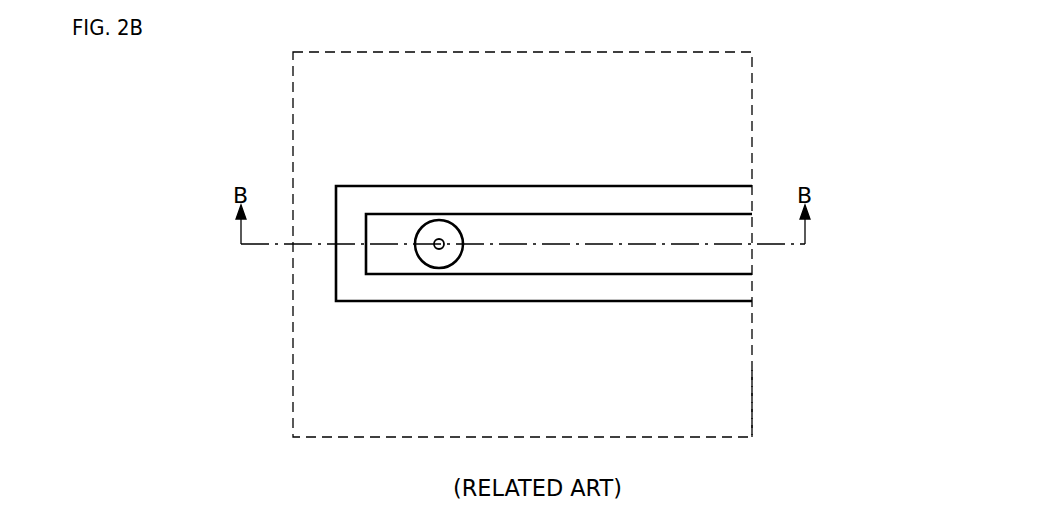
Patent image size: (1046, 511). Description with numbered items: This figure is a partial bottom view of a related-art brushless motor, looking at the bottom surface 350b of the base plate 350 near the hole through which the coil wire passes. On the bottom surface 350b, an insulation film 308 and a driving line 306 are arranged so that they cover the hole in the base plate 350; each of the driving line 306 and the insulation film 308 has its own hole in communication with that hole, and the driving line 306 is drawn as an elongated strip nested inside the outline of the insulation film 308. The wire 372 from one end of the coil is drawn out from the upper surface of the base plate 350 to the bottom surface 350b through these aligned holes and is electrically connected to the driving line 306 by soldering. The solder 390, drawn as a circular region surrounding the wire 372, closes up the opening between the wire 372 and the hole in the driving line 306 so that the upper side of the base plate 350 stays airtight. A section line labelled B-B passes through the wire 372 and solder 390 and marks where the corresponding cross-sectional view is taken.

The driving line 306 is at (742, 257).
The insulation film 308 is at (742, 200).
The base plate 350 is at (740, 383).
The bottom surface 350b is at (740, 417).
The wire 372 is at (435, 238).
The solder 390 is at (437, 252).